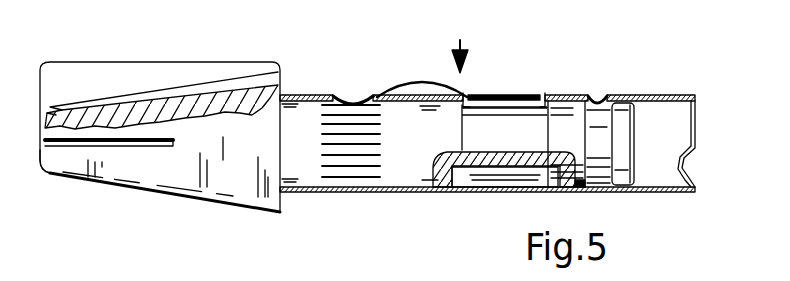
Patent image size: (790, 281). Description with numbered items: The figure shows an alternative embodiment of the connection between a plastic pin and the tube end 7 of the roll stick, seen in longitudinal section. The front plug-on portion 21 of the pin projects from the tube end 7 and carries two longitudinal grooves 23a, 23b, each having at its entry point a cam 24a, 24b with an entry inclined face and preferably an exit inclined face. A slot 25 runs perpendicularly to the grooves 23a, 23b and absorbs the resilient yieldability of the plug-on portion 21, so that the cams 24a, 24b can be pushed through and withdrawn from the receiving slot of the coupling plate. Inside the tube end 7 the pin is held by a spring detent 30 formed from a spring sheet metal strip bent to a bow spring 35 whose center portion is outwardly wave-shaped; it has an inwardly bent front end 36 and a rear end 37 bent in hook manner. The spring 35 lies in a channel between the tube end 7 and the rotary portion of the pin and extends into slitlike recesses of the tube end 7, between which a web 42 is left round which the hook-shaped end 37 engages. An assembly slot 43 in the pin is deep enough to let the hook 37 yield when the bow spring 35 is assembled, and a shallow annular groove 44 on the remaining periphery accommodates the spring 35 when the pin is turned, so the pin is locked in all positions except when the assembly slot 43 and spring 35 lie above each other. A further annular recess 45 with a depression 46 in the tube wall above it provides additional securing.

The plug-on portion 21 is at (147, 62).
The cam 24a is at (50, 108).
The longitudinal groove 23a is at (133, 104).
The slot 25 is at (160, 146).
The cam 24b is at (55, 168).
The longitudinal groove 23b is at (114, 183).
The tube end 7 is at (670, 98).
The inwardly bent front end 36 is at (355, 100).
The bow spring 35 is at (418, 84).
The spring detent 30 is at (471, 52).
The web 42 is at (498, 94).
The rear end 37 is at (550, 94).
The depression 46 is at (600, 96).
The assembly slot 43 is at (462, 187).
The annular groove 44 is at (513, 137).
The further annular recess 45 is at (602, 182).